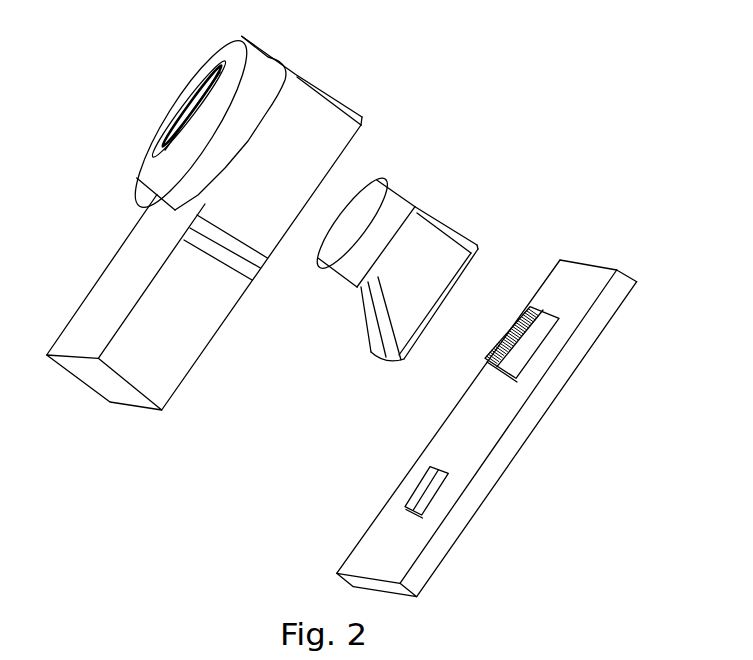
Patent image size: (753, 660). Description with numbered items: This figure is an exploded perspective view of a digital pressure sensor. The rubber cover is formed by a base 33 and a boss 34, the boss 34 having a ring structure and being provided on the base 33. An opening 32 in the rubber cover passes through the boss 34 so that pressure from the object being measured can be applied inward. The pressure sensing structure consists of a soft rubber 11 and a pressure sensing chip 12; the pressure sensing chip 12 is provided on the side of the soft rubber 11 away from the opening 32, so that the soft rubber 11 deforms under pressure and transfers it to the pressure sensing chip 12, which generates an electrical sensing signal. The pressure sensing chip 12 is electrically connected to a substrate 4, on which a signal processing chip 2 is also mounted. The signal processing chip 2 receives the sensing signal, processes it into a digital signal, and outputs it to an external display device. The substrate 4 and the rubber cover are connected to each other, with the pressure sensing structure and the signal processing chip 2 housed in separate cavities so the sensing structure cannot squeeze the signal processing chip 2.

The signal processing chip 2 is at (421, 490).
The substrate 4 is at (582, 275).
The soft rubber 11 is at (398, 180).
The pressure sensing chip 12 is at (524, 354).
The opening 32 is at (203, 98).
The base 33 is at (280, 133).
The boss 34 is at (255, 62).